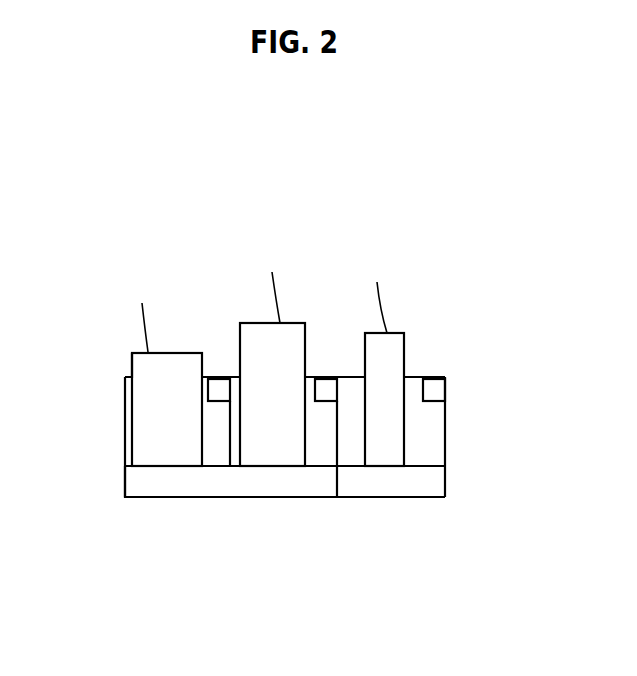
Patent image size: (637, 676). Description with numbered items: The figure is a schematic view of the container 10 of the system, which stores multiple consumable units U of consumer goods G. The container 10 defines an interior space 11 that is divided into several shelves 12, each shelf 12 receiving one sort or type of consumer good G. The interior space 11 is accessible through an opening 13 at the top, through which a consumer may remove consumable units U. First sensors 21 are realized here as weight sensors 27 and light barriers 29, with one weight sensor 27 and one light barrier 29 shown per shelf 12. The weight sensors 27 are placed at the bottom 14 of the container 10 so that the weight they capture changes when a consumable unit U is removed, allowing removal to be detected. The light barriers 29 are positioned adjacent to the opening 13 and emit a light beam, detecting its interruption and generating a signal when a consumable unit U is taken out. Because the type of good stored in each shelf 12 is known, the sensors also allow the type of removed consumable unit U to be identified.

The container 10 is at (445, 442).
The interior space 11 is at (205, 425).
The shelf 12 is at (427, 423).
The opening 13 is at (125, 360).
The bottom 14 is at (123, 487).
The first sensor 21 is at (307, 401).
The weight sensor 27 is at (177, 487).
The light barrier 29 is at (222, 379).